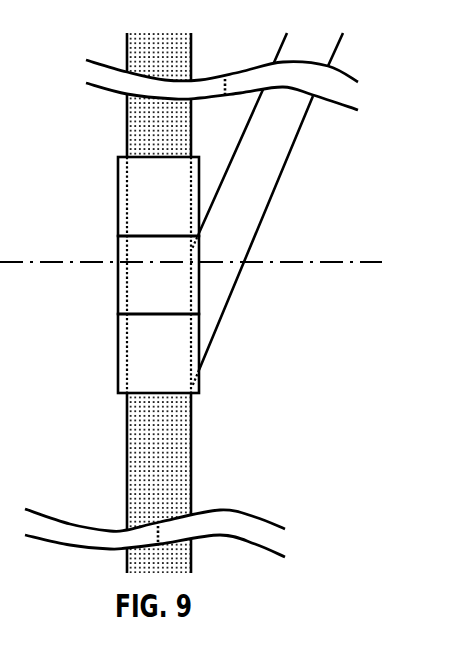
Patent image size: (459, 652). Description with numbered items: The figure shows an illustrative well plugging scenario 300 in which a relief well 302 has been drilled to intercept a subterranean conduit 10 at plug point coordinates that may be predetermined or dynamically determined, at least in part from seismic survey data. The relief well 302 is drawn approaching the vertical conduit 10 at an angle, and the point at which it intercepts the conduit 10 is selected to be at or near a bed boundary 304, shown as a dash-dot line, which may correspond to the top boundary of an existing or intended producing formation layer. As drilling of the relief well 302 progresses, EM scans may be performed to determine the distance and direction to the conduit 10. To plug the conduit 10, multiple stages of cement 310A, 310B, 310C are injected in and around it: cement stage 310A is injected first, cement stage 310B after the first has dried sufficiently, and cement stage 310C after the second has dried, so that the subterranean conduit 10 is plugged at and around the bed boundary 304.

The subterranean conduit 10 is at (126, 131).
The well plugging scenario 300 is at (313, 425).
The relief well 302 is at (281, 181).
The bed boundary 304 is at (337, 262).
The cement stage 310A is at (117, 187).
The cement stage 310B is at (117, 282).
The cement stage 310C is at (117, 349).